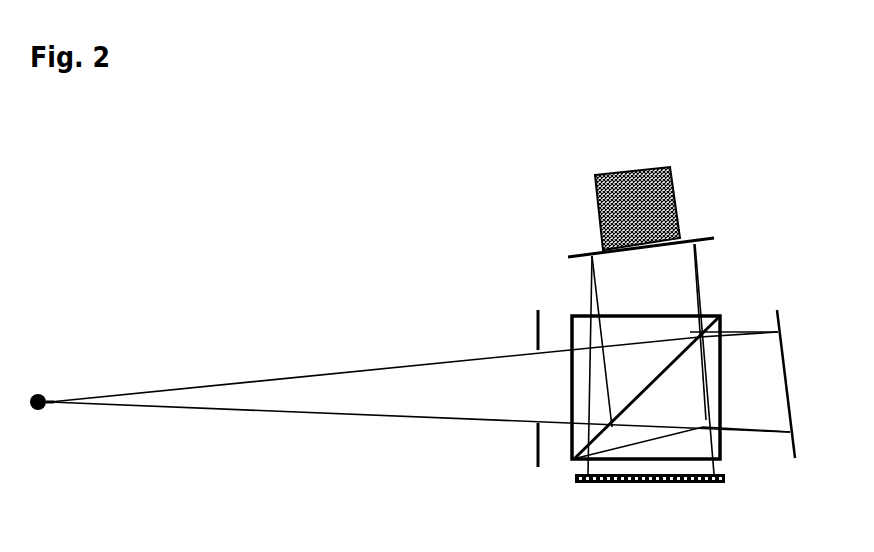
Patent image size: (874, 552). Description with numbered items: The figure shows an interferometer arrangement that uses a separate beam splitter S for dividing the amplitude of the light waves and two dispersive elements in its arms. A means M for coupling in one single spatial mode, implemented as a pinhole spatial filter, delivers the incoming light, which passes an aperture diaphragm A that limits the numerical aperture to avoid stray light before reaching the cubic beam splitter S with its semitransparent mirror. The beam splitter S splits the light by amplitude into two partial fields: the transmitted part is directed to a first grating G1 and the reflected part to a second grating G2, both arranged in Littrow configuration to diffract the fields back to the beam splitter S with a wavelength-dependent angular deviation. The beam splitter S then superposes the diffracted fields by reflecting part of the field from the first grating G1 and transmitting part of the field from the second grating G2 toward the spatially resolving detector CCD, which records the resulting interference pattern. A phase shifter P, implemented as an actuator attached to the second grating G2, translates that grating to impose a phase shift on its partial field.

The means for coupling in one single spatial mode M is at (51, 433).
The aperture diaphragm A is at (513, 392).
The beam splitter S is at (646, 387).
The first grating G1 is at (791, 368).
The second grating G2 is at (661, 240).
The phase shifter P is at (618, 208).
The detector CCD is at (650, 501).